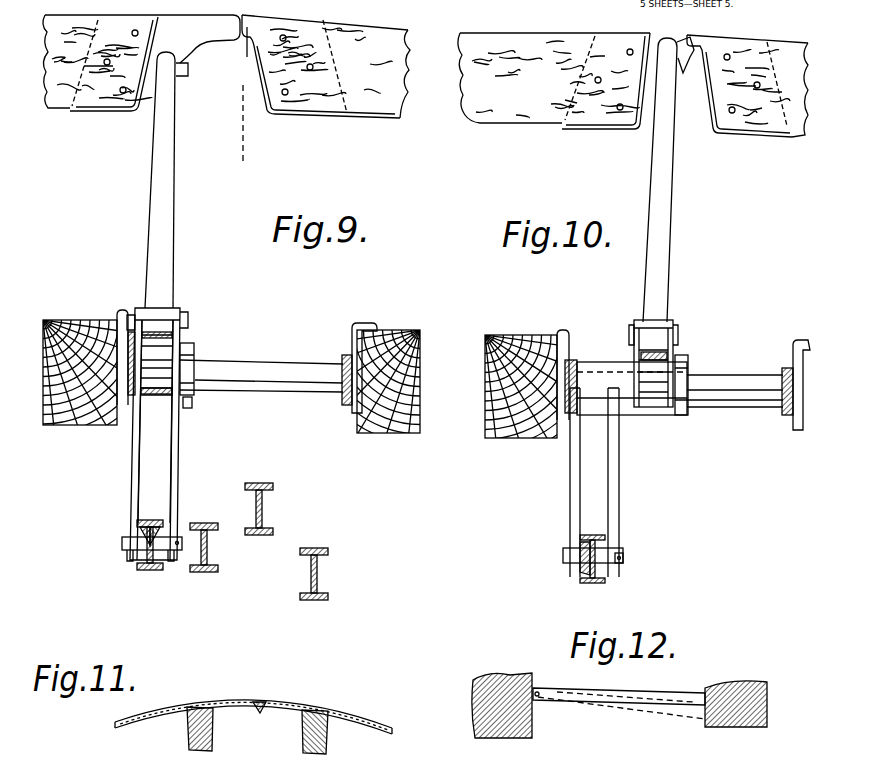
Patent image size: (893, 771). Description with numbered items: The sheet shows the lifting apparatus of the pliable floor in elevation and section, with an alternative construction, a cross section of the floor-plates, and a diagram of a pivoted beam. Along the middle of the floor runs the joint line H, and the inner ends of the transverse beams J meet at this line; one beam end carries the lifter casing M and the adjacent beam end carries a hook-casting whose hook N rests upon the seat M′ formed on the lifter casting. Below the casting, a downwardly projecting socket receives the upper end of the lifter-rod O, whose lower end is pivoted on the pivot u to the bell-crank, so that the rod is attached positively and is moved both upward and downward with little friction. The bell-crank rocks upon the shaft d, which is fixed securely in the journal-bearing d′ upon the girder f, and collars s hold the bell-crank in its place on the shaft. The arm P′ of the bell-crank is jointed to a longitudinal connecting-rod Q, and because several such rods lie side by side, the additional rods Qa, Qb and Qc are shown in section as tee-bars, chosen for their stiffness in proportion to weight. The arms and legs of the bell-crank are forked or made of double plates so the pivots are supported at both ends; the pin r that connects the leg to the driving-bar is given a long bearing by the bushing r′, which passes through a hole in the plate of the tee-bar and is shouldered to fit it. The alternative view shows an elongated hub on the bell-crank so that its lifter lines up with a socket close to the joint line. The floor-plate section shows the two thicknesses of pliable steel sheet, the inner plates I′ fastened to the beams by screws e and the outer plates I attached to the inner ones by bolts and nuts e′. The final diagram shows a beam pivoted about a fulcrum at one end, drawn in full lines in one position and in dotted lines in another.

In FIG. 9, the lifter casing M is at (132, 111).
In FIG. 10, the lifter casing M is at (637, 129).
In FIG. 9, the seat M′ is at (210, 39).
In FIG. 10, the seat M′ is at (689, 58).
In FIG. 9, the hook N is at (244, 54).
In FIG. 9, the joint line H is at (237, 139).
In FIG. 9, the transverse beam J is at (391, 118).
In FIG. 10, the transverse beam J is at (795, 138).
In FIG. 11, the transverse beam J is at (302, 741).
In FIG. 12, the transverse beam J is at (688, 691).
In FIG. 9, the lifter-rod O is at (151, 187).
In FIG. 10, the lifter-rod O is at (672, 185).
In FIG. 9, the bell-crank arm P′ is at (182, 337).
In FIG. 10, the bell-crank arm P′ is at (633, 352).
In FIG. 9, the pivot u is at (182, 320).
In FIG. 10, the pivot u is at (676, 330).
In FIG. 9, the girder f is at (78, 426).
In FIG. 10, the girder f is at (515, 439).
In FIG. 9, the shaft d is at (279, 361).
In FIG. 10, the shaft d is at (731, 376).
In FIG. 9, the journal-bearing d′ is at (360, 325).
In FIG. 10, the journal-bearing d′ is at (790, 423).
In FIG. 9, the collar s is at (195, 402).
In FIG. 10, the collar s is at (686, 414).
In FIG. 9, the pin r is at (122, 543).
In FIG. 10, the pin r is at (624, 557).
In FIG. 9, the bushing r′ is at (142, 532).
In FIG. 10, the bushing r′ is at (578, 546).
In FIG. 9, the connecting-rod Q is at (150, 572).
In FIG. 10, the connecting-rod Q is at (585, 584).
In FIG. 9, the connecting-rod Qa is at (204, 574).
In FIG. 9, the connecting-rod Qb is at (256, 537).
In FIG. 9, the connecting-rod Qc is at (314, 602).
In FIG. 11, the outer floor-plate I is at (347, 723).
In FIG. 11, the inner floor-plate I′ is at (347, 708).
In FIG. 11, the screw e is at (190, 721).
In FIG. 11, the bolt and nut e′ is at (259, 714).